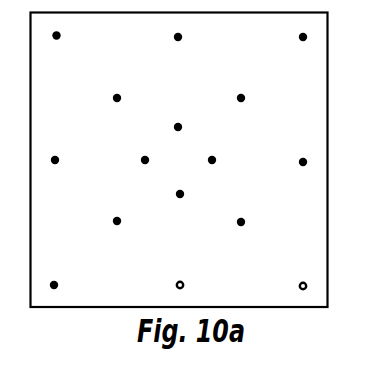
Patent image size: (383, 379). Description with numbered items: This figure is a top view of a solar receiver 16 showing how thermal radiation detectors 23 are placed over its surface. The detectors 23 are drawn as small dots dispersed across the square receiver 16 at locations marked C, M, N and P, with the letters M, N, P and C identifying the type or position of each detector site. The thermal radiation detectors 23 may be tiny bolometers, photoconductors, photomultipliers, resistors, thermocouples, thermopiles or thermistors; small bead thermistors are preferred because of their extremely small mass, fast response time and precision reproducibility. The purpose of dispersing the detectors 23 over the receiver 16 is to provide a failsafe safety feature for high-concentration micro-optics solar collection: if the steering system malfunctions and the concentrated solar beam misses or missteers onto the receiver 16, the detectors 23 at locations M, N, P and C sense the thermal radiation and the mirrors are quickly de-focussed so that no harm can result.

The solar receiver 16 is at (317, 95).
The thermal radiation detectors 23 is at (60, 34).
The location M is at (179, 161).
The location N is at (179, 167).
The location P is at (179, 150).
The location C is at (177, 162).